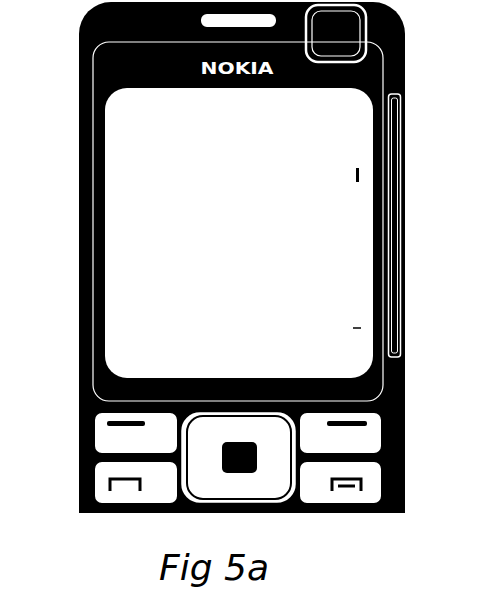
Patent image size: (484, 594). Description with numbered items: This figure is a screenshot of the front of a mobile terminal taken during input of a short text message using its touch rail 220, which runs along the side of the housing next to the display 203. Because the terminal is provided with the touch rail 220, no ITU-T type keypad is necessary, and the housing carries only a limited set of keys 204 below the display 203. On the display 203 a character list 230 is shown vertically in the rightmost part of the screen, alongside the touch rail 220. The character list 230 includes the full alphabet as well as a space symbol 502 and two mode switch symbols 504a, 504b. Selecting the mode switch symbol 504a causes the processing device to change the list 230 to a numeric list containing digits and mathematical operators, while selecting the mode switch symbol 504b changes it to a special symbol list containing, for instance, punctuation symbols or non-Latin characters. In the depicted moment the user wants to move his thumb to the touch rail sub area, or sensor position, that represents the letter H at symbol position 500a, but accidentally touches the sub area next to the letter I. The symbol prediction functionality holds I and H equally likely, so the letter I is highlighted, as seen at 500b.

The display 203 is at (128, 130).
The set of keys 204 is at (114, 441).
The touch rail 220 is at (393, 100).
The character list 230 is at (344, 108).
The symbol position 500a is at (352, 160).
The highlighted symbol 500b is at (353, 177).
The space symbol 502 is at (352, 328).
The mode switch symbol 504a is at (353, 337).
The mode switch symbol 504b is at (353, 346).